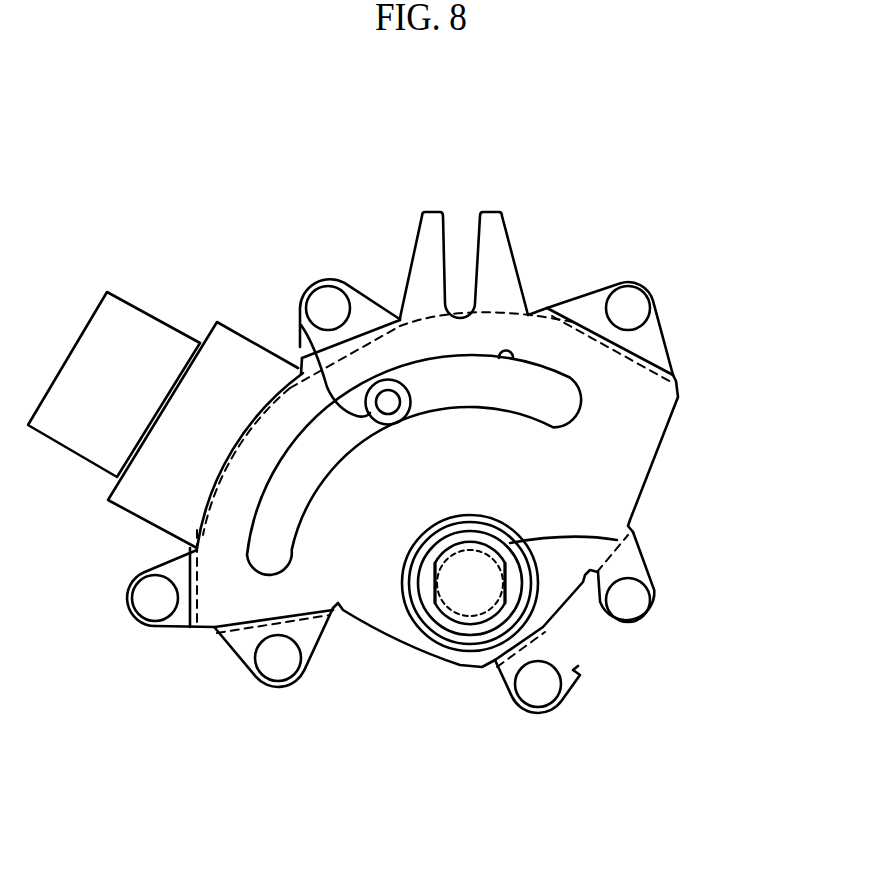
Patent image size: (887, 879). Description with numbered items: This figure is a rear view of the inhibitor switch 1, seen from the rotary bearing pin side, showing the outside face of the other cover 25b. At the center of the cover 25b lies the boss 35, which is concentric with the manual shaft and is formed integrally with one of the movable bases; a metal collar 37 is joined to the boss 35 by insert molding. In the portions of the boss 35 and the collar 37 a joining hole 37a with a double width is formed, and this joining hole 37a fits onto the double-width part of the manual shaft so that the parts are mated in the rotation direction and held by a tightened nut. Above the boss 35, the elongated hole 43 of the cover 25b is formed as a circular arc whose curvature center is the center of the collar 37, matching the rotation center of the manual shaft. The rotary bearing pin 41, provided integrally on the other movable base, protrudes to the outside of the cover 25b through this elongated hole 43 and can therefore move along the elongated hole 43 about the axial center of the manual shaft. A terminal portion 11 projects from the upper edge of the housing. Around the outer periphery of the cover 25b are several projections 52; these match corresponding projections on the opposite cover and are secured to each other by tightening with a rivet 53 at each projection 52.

The electric pump assembly 1 is at (556, 202).
The fork-shaped terminal 11 is at (485, 236).
The cover 25b is at (636, 276).
The boss 35 is at (500, 523).
The collar 37 is at (630, 532).
The joining hole 37a is at (505, 590).
The rotary bearing pin 41 is at (385, 405).
The elongated hole 43 is at (510, 358).
The projection 52 is at (383, 288).
The rivet 53 is at (328, 300).